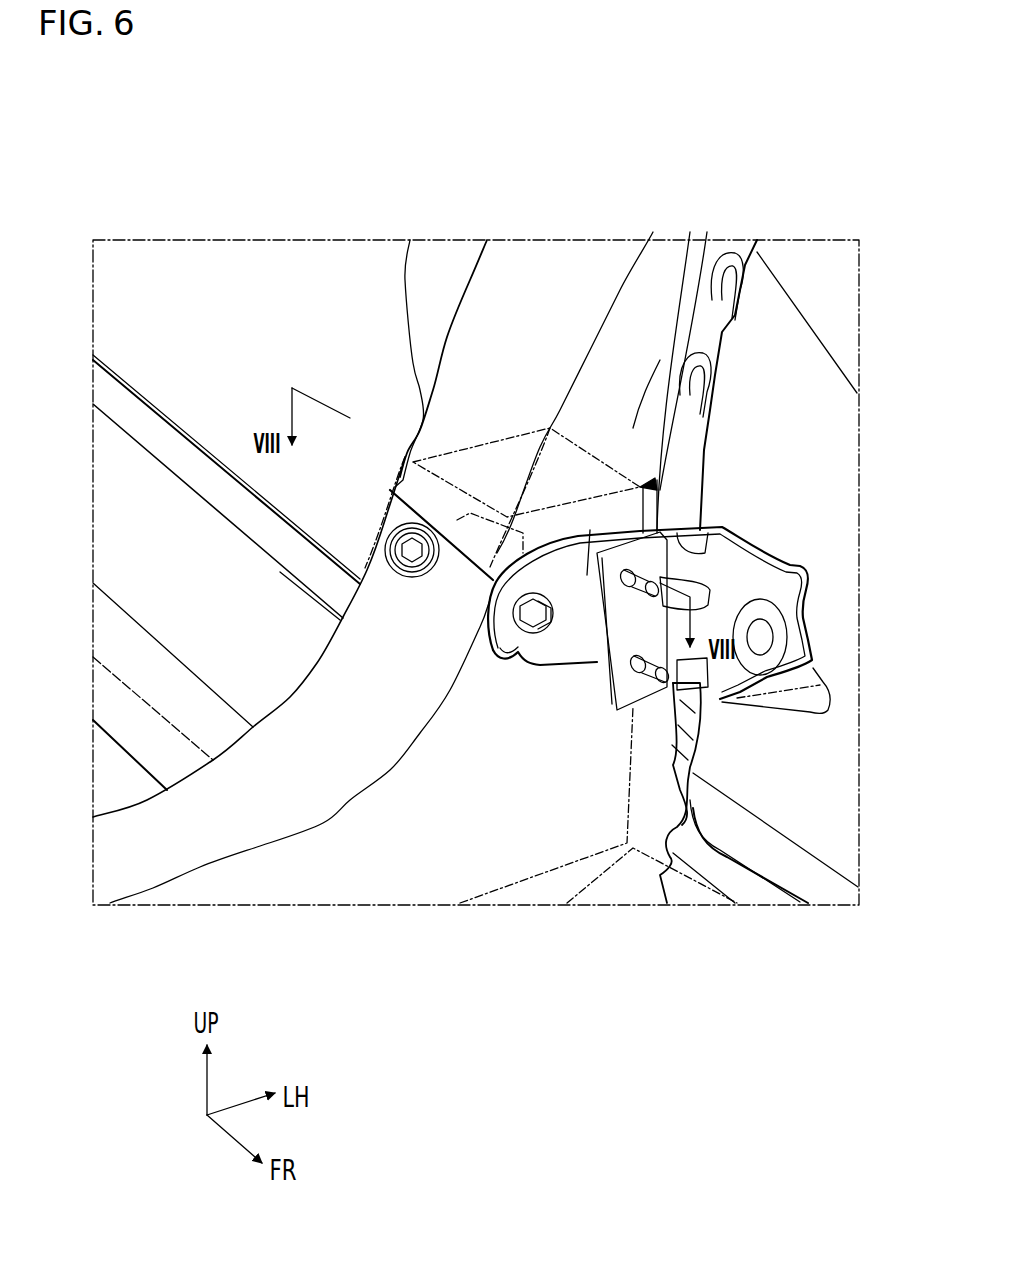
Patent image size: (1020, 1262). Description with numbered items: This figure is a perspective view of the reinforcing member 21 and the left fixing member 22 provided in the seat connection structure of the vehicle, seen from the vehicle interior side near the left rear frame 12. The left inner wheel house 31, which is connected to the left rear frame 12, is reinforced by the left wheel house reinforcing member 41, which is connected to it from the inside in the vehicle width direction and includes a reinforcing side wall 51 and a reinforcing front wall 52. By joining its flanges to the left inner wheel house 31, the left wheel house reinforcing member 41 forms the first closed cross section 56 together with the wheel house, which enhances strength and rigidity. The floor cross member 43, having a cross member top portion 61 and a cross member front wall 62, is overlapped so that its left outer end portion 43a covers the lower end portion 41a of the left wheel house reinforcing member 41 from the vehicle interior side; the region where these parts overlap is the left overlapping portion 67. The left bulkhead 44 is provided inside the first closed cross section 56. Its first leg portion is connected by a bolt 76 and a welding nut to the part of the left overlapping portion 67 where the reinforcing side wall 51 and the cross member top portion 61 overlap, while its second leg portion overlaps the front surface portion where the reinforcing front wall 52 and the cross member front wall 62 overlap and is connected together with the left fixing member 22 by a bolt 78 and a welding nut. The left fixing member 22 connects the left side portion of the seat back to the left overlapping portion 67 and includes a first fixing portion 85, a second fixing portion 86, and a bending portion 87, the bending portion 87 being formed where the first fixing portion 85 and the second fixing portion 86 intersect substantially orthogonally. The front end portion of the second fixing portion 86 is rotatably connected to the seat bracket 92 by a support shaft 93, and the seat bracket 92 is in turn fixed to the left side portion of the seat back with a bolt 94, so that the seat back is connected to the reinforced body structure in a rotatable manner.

The left rear frame 12 is at (263, 657).
The reinforcing member 21 is at (481, 200).
The left fixing member 22 is at (777, 553).
The left inner wheel house 31 is at (757, 463).
The left wheel house reinforcing member 41 is at (468, 270).
The lower end portion 41a is at (407, 453).
The floor cross member 43 is at (120, 808).
The left outer end portion 43a is at (447, 595).
The left bulkhead 44 is at (710, 447).
The reinforcing side wall 51 is at (448, 402).
The reinforcing front wall 52 is at (683, 262).
The first closed cross section 56 is at (461, 385).
The cross member top portion 61 is at (175, 862).
The cross member front wall 62 is at (453, 853).
The left overlapping portion 67 is at (392, 524).
The bolt 76 is at (390, 553).
The bolt 78 is at (543, 620).
The first fixing portion 85 is at (583, 665).
The second fixing portion 86 is at (753, 557).
The bending portion 87 is at (590, 530).
The seat bracket 92 is at (782, 623).
The support shaft 93 is at (826, 680).
The bolt 94 is at (668, 680).